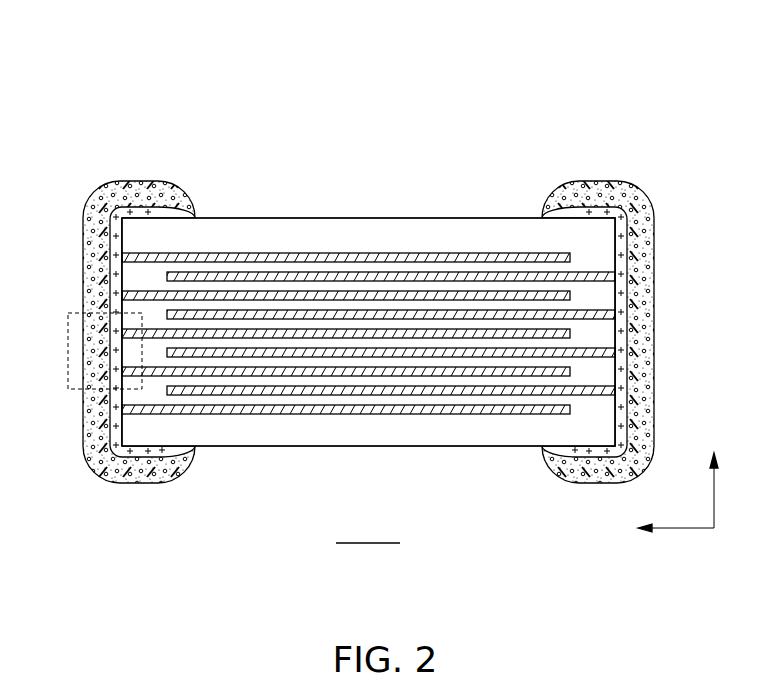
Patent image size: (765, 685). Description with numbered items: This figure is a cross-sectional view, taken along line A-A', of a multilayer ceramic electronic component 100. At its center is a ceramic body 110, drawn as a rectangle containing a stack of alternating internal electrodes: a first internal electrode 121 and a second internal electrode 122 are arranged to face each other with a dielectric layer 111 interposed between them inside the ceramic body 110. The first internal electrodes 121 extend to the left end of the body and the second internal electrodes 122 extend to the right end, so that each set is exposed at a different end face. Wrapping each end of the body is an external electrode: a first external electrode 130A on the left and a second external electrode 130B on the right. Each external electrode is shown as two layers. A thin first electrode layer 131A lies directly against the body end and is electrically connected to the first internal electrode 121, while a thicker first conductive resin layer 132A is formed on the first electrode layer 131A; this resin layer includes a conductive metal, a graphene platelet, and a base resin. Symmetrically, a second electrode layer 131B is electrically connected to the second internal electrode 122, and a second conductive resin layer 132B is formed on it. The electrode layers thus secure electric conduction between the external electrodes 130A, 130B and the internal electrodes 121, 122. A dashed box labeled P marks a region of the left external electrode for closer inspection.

The multilayer ceramic electronic component 100 is at (388, 45).
The ceramic body 110 is at (413, 217).
The dielectric layer 111 is at (263, 267).
The first internal electrode 121 is at (323, 253).
The second internal electrode 122 is at (380, 278).
The first external electrode 130A is at (212, 118).
The first electrode layer 131A is at (160, 210).
The first conductive resin layer 132A is at (116, 197).
The second external electrode 130B is at (525, 118).
The second electrode layer 131B is at (577, 208).
The second conductive resin layer 132B is at (617, 207).
The enlarged region P is at (68, 350).